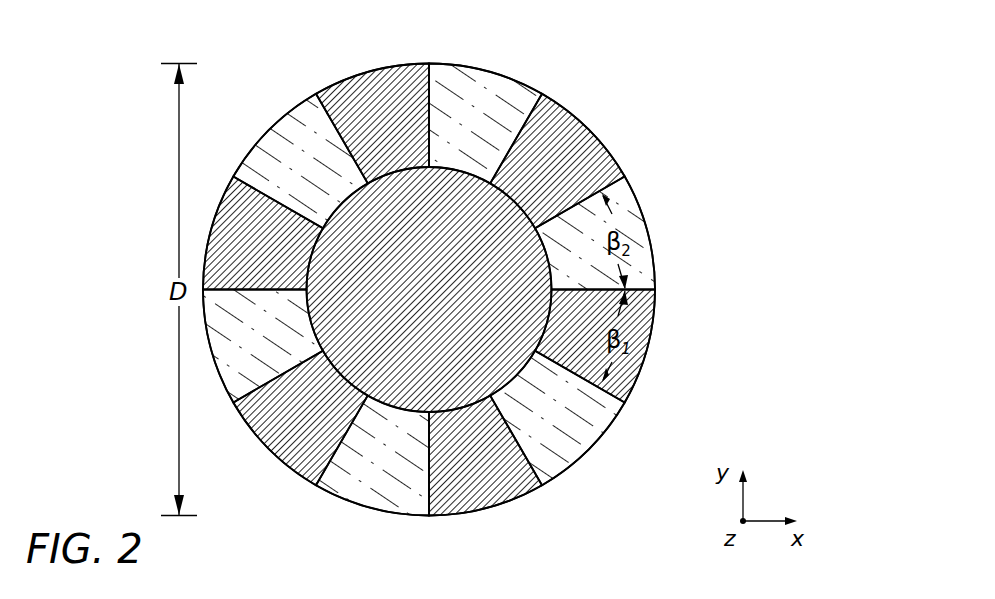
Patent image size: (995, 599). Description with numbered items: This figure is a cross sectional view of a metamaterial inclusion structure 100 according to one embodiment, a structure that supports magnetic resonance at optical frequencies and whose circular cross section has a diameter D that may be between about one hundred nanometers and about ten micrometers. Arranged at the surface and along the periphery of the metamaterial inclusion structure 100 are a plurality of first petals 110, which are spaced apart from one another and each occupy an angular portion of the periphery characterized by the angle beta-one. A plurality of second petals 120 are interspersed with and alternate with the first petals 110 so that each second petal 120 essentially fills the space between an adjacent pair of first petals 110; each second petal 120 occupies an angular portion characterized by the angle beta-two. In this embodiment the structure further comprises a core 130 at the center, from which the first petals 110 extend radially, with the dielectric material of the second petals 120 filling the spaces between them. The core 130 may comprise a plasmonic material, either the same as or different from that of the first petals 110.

The metamaterial inclusion structure 100 is at (672, 46).
The first petals 110 is at (600, 118).
The second petals 120 is at (484, 74).
The core 130 is at (453, 300).